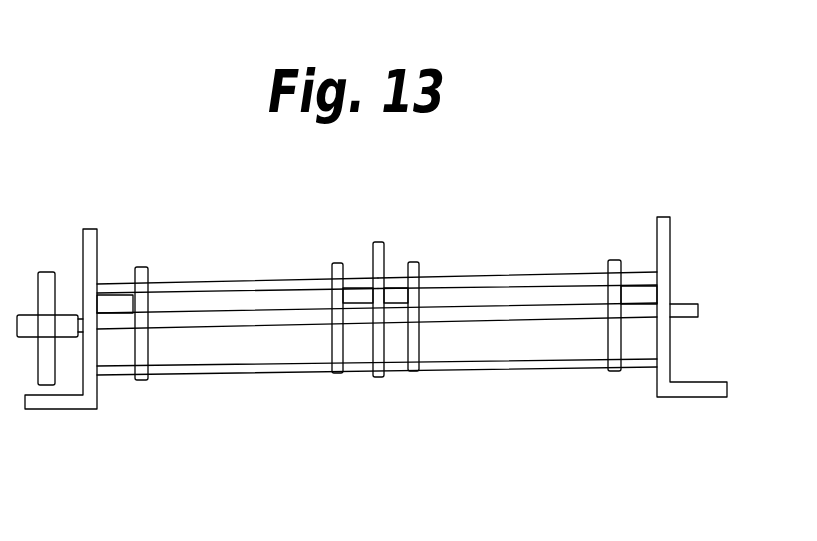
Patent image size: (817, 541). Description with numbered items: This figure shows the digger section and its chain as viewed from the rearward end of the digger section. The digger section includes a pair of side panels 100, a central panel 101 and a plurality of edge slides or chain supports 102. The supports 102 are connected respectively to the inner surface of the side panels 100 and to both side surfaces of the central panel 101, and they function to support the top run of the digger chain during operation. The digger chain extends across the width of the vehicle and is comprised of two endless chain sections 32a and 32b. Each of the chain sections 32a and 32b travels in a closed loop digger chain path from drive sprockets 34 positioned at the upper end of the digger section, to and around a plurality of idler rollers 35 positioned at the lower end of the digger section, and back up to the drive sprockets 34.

The side panel 100 is at (97, 236).
The chain support 102 is at (117, 295).
The first endless chain section 32a is at (257, 283).
The second endless chain section 32b is at (477, 280).
The idler roller 35 is at (227, 320).
The drive sprocket 34 is at (146, 380).
The central panel 101 is at (380, 350).